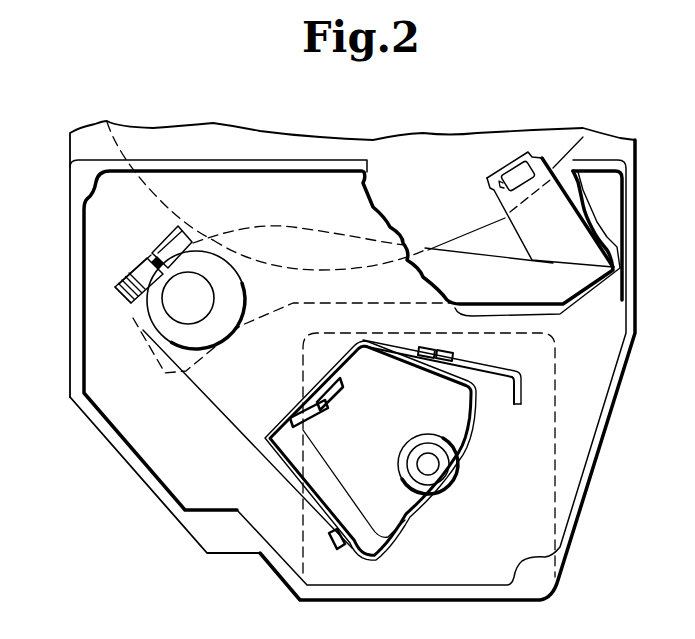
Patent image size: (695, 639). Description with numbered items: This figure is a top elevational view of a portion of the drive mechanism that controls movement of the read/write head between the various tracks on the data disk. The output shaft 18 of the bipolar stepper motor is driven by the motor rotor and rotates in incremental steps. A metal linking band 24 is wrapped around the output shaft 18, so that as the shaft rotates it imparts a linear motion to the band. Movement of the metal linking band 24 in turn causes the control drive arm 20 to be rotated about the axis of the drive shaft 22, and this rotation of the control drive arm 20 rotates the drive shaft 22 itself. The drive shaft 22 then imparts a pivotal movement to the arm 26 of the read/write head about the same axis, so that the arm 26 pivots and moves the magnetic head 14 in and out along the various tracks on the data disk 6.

The data disk 6 is at (296, 201).
The magnetic head 14 is at (528, 151).
The output shaft 18 is at (432, 462).
The control drive arm 20 is at (225, 396).
The drive shaft 22 is at (178, 308).
The metal linking band 24 is at (407, 530).
The arm 26 is at (423, 240).